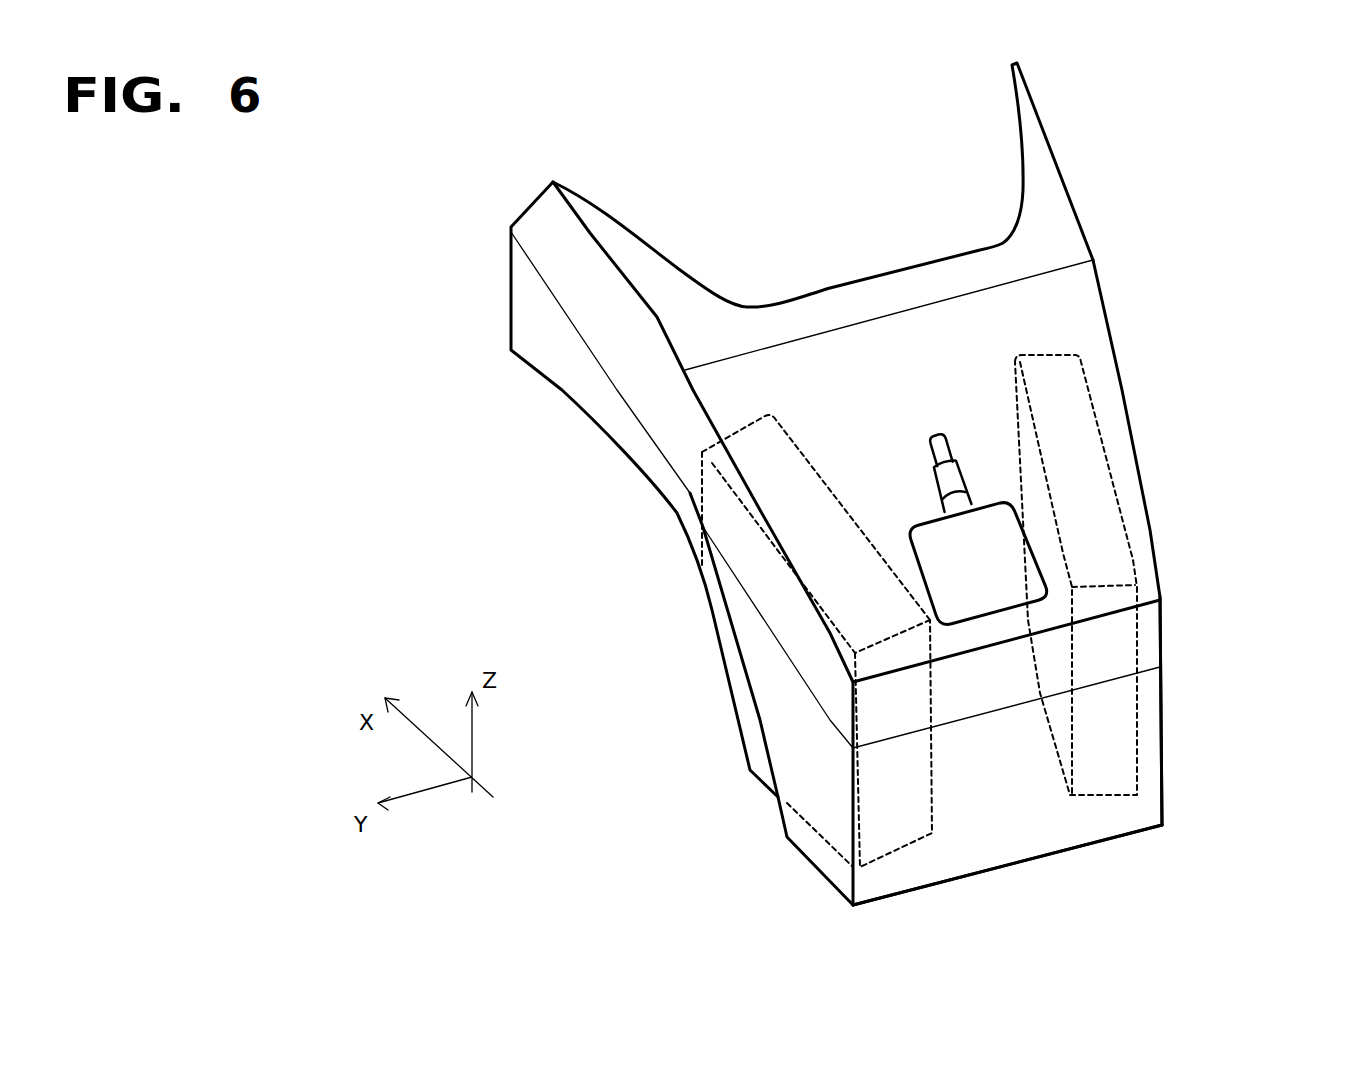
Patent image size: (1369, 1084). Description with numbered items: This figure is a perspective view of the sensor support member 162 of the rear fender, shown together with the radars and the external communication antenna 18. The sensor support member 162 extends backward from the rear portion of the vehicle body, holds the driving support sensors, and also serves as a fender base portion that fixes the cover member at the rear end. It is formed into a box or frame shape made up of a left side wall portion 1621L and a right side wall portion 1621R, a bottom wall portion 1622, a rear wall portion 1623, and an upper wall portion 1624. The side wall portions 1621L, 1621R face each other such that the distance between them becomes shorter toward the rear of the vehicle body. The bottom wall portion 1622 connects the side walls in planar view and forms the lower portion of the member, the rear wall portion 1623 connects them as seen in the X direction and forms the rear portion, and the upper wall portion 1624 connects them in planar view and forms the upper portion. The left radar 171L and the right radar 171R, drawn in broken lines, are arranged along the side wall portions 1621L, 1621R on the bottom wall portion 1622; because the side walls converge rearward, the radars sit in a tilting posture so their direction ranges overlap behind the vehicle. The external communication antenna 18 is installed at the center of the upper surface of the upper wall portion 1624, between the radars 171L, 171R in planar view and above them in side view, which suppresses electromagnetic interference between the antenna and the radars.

The sensor support member 162 is at (428, 225).
The upper wall portion 1624 is at (1072, 315).
The left side wall portion 1621L is at (622, 423).
The right side wall portion 1621R is at (1138, 455).
The bottom wall portion 1622 is at (1102, 842).
The rear wall portion 1623 is at (1010, 832).
The external communication antenna 18 is at (1047, 570).
The left radar 171L is at (725, 695).
The right radar 171R is at (1140, 697).